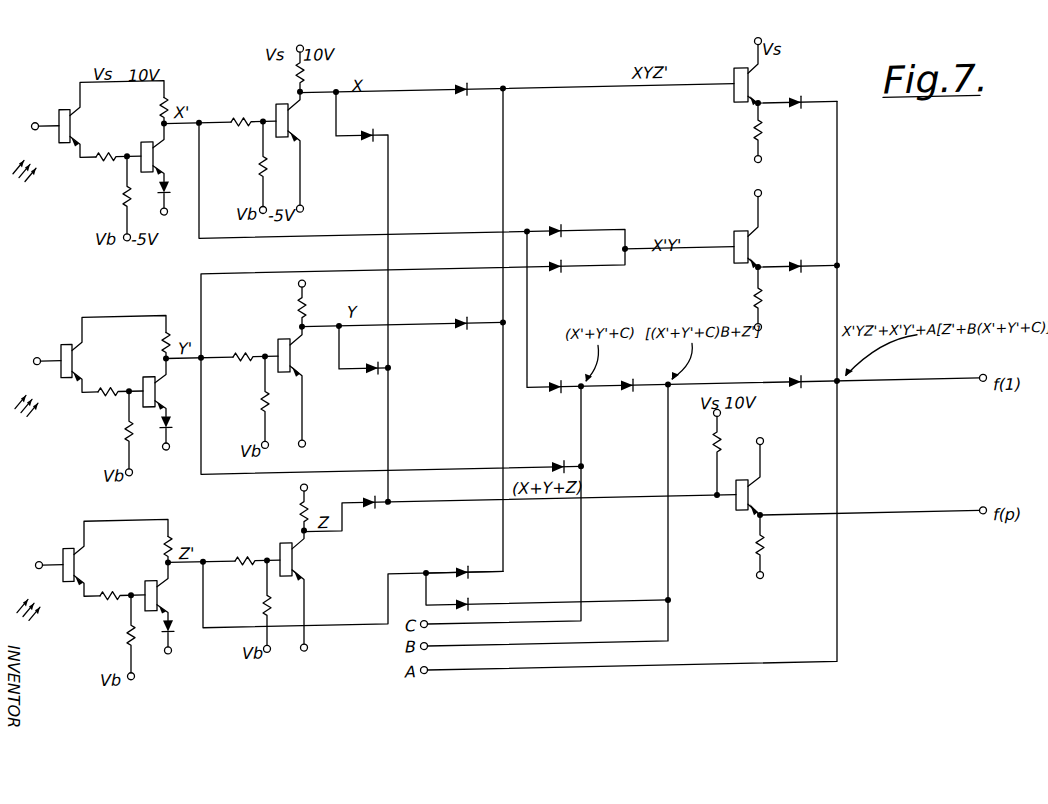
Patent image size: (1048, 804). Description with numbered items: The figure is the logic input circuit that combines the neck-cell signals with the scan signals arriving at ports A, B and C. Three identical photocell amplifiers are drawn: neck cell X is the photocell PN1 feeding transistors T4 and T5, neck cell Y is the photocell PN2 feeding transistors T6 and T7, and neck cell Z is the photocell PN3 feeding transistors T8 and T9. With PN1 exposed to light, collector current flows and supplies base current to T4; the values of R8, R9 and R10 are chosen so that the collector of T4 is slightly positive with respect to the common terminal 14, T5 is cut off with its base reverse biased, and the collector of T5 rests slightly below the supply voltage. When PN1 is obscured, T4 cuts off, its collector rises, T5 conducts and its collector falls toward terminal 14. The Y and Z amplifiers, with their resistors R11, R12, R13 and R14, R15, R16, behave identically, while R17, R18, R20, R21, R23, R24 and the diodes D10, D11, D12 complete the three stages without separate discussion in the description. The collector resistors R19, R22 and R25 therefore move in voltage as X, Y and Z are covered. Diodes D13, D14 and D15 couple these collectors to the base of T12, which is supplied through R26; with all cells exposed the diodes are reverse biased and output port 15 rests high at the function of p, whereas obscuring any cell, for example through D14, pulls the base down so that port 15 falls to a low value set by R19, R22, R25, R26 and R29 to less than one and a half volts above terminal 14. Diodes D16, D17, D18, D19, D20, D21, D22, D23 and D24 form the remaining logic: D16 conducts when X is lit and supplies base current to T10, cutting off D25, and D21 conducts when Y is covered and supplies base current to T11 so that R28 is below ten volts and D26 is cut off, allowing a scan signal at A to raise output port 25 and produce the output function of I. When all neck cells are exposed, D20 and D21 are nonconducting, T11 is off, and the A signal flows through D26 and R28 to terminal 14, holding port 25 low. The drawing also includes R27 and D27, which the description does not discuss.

The common terminal 14 is at (247, 434).
The output port 15 is at (923, 524).
The output port 25 is at (971, 369).
The neck cell X PN1 is at (88, 131).
The neck cell Y photocell PN2 is at (90, 366).
The neck cell Z photocell PN3 is at (92, 569).
The resistor R8 is at (118, 148).
The resistor R9 is at (114, 198).
The resistor R10 is at (149, 112).
The resistor R11 is at (120, 384).
The resistor R12 is at (117, 433).
The resistor R13 is at (155, 345).
The resistor R14 is at (122, 588).
The resistor R15 is at (119, 637).
The resistor R16 is at (153, 549).
The resistor R17 is at (253, 114).
The resistor R18 is at (250, 167).
The resistor R19 is at (315, 67).
The resistor R20 is at (255, 349).
The resistor R21 is at (251, 402).
The resistor R22 is at (318, 302).
The resistor R23 is at (256, 553).
The resistor R24 is at (249, 606).
The resistor R25 is at (286, 507).
The resistor R26 is at (733, 452).
The resistor R27 is at (777, 132).
The resistor R28 is at (776, 298).
The resistor R29 is at (777, 546).
The transistor T4 is at (157, 152).
The transistor T5 is at (293, 148).
The transistor T6 is at (160, 387).
The transistor T7 is at (296, 383).
The transistor T8 is at (162, 591).
The transistor T9 is at (299, 587).
The transistor T10 is at (758, 71).
The transistor T11 is at (758, 229).
The transistor T12 is at (759, 476).
The diode D10 is at (179, 188).
The diode D11 is at (182, 423).
The diode D12 is at (185, 626).
The diode D13 is at (376, 124).
The diode D14 is at (376, 359).
The diode D15 is at (369, 492).
The diode D16 is at (463, 79).
The diode D17 is at (466, 313).
The diode D18 is at (468, 561).
The diode D19 is at (450, 594).
The diode D20 is at (564, 221).
The diode D21 is at (564, 258).
The diode D22 is at (561, 379).
The diode D23 is at (561, 456).
The diode D24 is at (631, 377).
The diode D25 is at (803, 91).
The diode D26 is at (801, 255).
The diode D27 is at (801, 372).